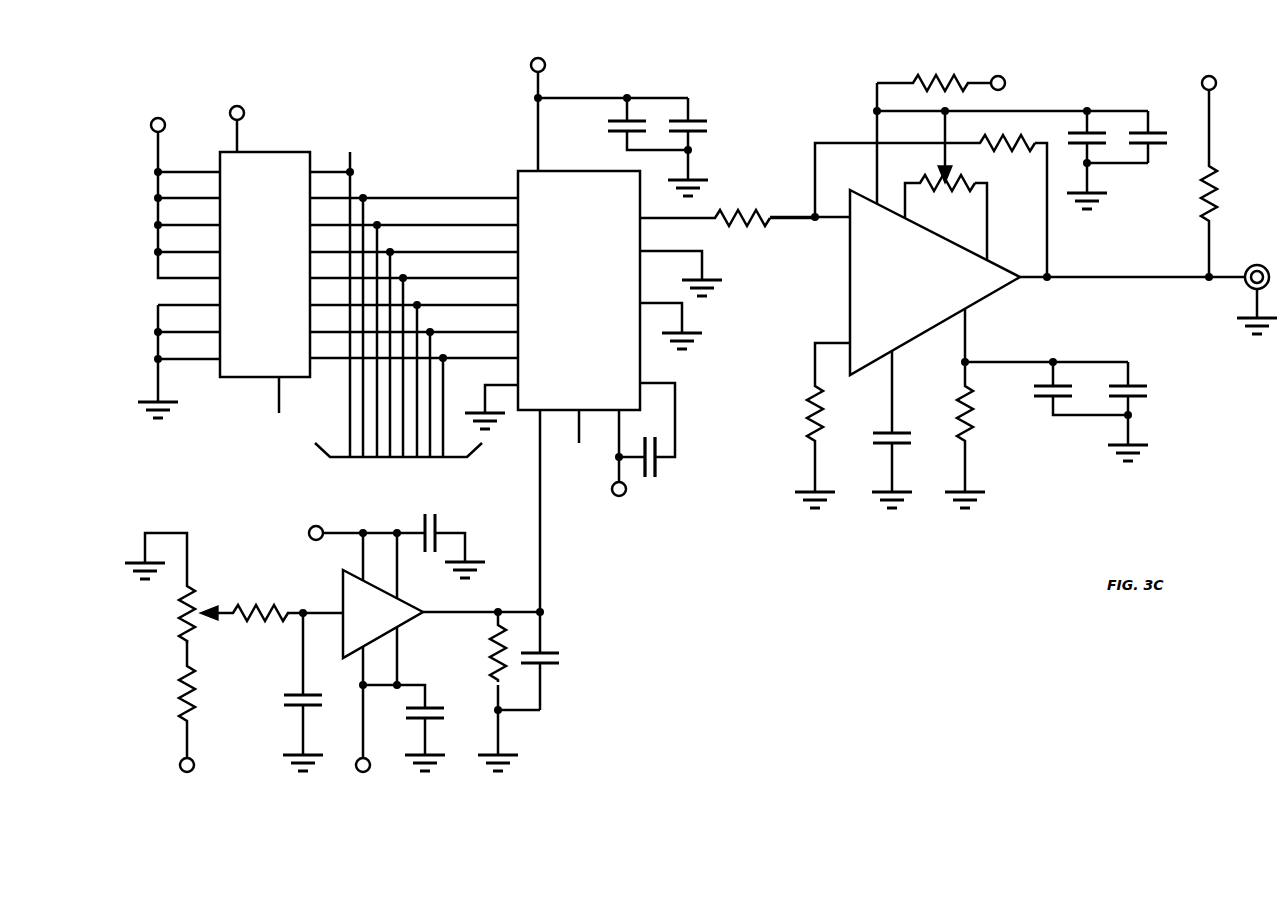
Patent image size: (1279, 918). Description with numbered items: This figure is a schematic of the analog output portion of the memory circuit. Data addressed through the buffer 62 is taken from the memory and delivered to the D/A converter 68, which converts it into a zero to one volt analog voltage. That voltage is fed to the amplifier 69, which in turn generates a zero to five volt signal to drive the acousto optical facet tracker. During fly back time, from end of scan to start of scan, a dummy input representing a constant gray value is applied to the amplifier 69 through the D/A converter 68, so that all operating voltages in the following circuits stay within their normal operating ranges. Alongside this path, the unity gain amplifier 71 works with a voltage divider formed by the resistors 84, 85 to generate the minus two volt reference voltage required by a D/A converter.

The buffer 62 is at (272, 152).
The D/A converter 68 is at (527, 170).
The amplifier 69 is at (850, 268).
The unity gain amplifier 71 is at (342, 582).
The resistor 84 is at (197, 598).
The resistor 85 is at (178, 690).